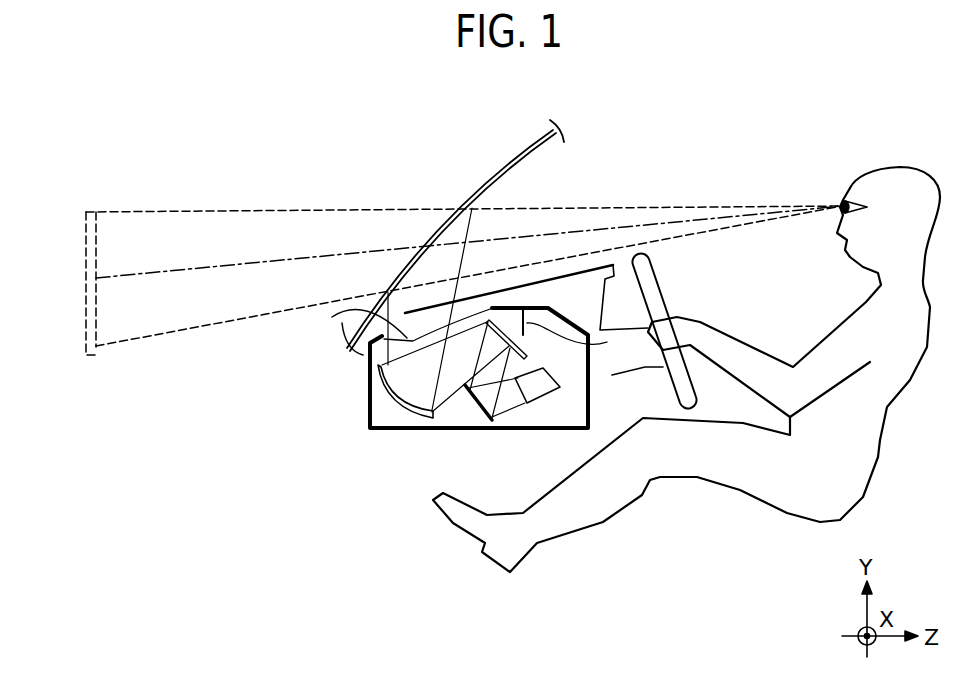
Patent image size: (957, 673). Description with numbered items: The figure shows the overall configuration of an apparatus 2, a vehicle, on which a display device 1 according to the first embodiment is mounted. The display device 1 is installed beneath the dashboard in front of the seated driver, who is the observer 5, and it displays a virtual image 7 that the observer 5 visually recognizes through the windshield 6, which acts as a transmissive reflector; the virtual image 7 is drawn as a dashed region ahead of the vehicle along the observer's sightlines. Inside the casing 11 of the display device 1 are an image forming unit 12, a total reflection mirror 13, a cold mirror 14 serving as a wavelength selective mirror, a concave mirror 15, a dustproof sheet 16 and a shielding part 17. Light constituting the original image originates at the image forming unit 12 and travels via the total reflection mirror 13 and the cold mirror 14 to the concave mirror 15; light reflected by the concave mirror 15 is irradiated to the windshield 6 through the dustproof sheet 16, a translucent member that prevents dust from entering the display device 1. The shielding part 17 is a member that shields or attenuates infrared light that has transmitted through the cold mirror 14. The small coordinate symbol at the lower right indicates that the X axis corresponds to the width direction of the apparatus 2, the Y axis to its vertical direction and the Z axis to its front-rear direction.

The display device 1 is at (464, 349).
The apparatus 2 is at (501, 111).
The observer 5 is at (902, 165).
The windshield 6 is at (492, 178).
The virtual image 7 is at (94, 211).
The casing 11 is at (591, 393).
The image forming unit 12 is at (541, 405).
The total reflection mirror 13 is at (481, 423).
The cold mirror 14 is at (505, 333).
The concave mirror 15 is at (400, 408).
The dustproof sheet 16 is at (332, 317).
The shielding part 17 is at (580, 338).